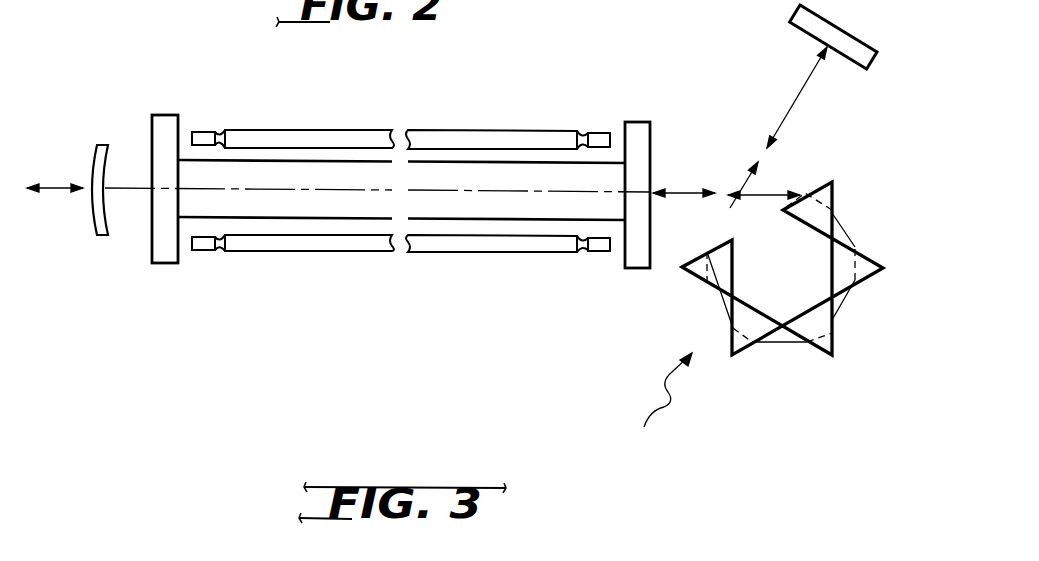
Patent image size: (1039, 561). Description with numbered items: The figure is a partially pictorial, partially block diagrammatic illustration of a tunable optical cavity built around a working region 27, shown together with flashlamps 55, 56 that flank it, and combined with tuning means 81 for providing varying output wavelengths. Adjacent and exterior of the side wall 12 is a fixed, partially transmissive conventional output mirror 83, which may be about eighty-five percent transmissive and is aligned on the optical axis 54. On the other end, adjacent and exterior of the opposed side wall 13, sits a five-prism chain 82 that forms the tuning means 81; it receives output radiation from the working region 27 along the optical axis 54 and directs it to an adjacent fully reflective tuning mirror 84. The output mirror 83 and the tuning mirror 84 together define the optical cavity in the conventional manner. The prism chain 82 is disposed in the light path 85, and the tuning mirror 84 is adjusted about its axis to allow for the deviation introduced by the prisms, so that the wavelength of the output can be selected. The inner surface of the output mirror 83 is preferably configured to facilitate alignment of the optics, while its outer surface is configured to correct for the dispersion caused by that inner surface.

The side wall 12 is at (161, 263).
The opposed side wall 13 is at (635, 268).
The working region 27 is at (513, 215).
The optical axis 54 is at (685, 194).
The flashlamp 55 is at (522, 254).
The flashlamp 56 is at (517, 131).
The tuning means 81 is at (658, 402).
The five-prism chain 82 is at (785, 279).
The output mirror 83 is at (102, 237).
The tuning mirror 84 is at (790, 12).
The light path 85 is at (766, 195).